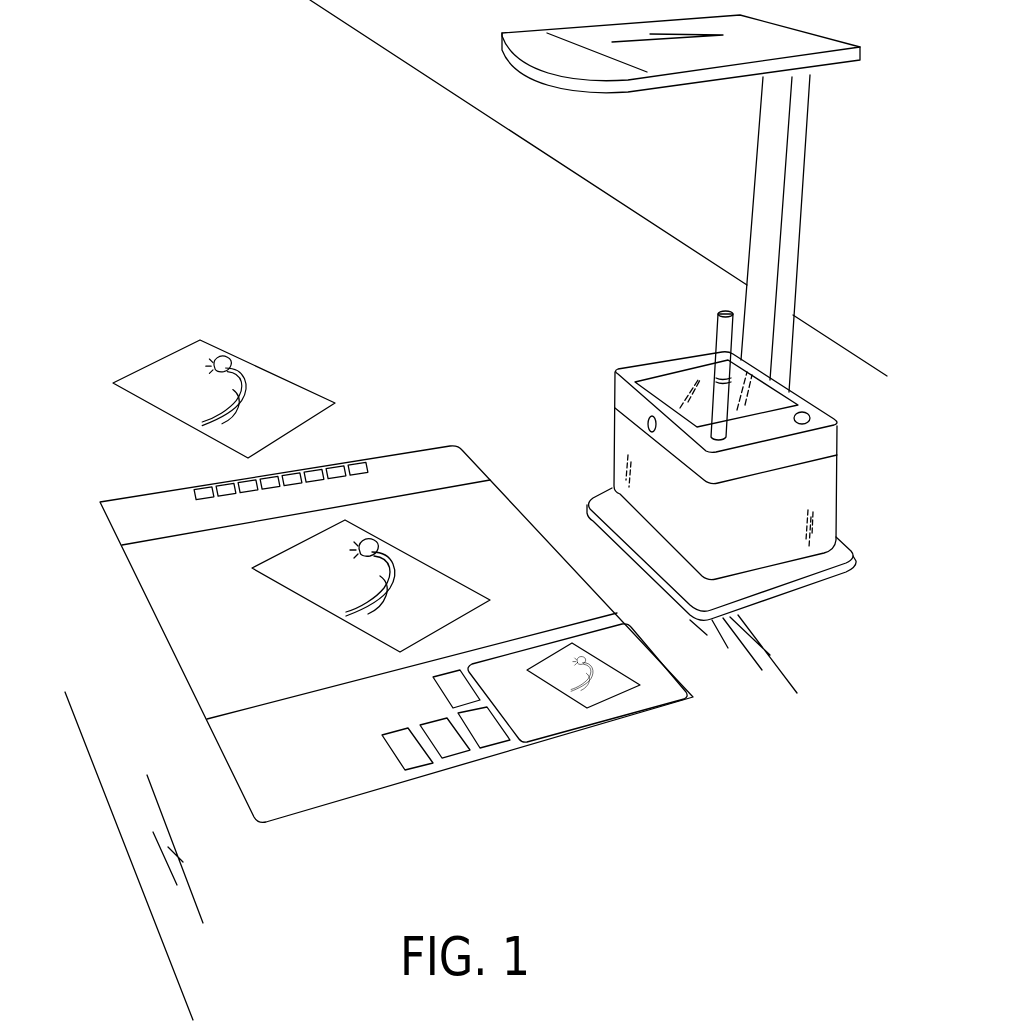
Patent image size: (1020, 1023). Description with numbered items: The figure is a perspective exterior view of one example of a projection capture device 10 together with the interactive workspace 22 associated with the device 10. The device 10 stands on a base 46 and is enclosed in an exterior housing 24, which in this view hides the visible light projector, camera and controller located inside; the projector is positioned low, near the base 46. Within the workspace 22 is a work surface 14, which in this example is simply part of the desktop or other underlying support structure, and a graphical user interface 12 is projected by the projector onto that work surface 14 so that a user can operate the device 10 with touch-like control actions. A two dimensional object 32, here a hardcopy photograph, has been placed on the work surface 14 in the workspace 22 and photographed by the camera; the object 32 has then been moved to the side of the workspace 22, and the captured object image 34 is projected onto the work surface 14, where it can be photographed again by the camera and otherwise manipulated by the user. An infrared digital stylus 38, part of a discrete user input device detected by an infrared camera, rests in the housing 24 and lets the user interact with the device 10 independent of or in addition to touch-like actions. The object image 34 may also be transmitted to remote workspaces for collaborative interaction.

The projection capture device 10 is at (630, 247).
The graphical user interface 12 is at (478, 756).
The work surface 14 is at (283, 636).
The interactive workspace 22 is at (515, 470).
The exterior housing 24 is at (763, 110).
The object 32 is at (173, 370).
The object image 34 is at (418, 567).
The infrared digital stylus 38 is at (723, 338).
The base 46 is at (830, 564).